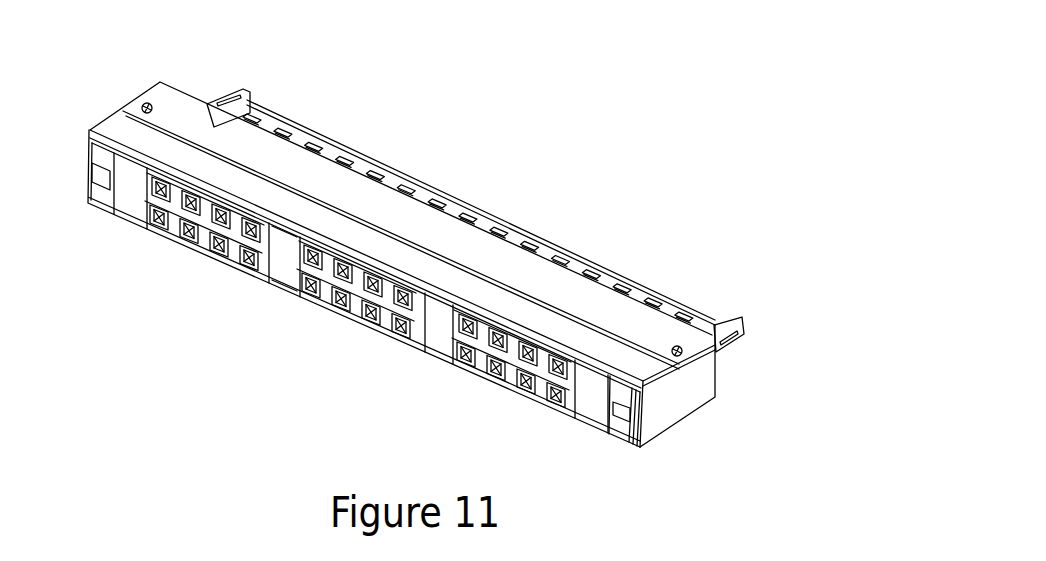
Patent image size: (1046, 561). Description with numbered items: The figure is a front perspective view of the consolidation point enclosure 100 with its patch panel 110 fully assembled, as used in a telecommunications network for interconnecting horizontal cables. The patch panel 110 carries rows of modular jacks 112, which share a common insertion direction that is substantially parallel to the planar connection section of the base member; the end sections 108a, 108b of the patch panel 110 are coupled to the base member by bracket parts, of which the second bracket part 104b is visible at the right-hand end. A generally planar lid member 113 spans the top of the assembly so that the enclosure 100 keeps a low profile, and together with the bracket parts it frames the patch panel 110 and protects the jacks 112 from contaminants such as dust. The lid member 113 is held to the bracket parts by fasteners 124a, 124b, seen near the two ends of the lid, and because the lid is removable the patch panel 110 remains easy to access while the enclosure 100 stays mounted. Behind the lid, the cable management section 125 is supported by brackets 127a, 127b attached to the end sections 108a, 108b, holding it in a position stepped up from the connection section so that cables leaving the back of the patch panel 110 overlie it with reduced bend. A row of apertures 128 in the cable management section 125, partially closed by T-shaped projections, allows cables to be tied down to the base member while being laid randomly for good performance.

The consolidation point enclosure 100 is at (360, 146).
The second bracket part 104b is at (683, 400).
The first end section of the patch panel 108a is at (103, 195).
The second end section of the patch panel 108b is at (620, 433).
The patch panel 110 is at (279, 279).
The modular jacks 112 is at (562, 404).
The lid member 113 is at (410, 210).
The fastener 124a is at (146, 104).
The fastener 124b is at (678, 347).
The cable management section 125 is at (580, 267).
The bracket 127a is at (223, 97).
The bracket 127b is at (727, 337).
The apertures 128 is at (500, 227).